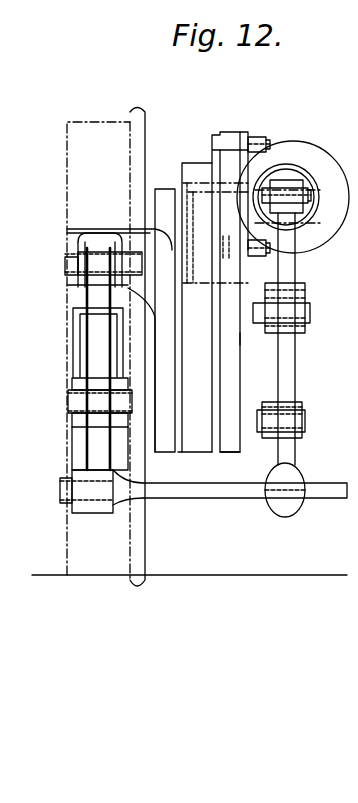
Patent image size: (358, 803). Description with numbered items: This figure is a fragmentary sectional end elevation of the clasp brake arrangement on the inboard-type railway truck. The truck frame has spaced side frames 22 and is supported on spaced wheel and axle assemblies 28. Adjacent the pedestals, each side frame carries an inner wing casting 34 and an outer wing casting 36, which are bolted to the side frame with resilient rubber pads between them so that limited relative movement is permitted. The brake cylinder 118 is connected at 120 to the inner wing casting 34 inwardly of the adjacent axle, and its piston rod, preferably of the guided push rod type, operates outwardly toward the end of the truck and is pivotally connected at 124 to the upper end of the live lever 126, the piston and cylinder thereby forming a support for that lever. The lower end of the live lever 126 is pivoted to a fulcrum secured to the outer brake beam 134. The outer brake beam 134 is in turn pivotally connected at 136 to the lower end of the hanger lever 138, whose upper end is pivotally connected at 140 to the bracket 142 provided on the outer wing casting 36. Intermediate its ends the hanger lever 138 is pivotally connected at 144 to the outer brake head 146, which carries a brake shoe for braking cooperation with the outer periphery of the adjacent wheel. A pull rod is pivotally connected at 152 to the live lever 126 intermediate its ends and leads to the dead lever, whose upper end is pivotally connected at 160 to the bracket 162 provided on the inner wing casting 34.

The side frame 22 is at (192, 452).
The wheel and axle assembly 28 is at (92, 572).
The inner wing casting 34 is at (228, 452).
The outer wing casting 36 is at (155, 208).
The brake cylinder 118 is at (308, 150).
The connection of brake cylinder to inner wing casting 120 is at (262, 142).
The pivotal connection of piston rod to live lever 124 is at (310, 204).
The live lever 126 is at (290, 273).
The outer brake beam 134 is at (257, 490).
The pivotal connection of outer brake beam to hanger lever 136 is at (60, 490).
The hanger lever 138 is at (100, 293).
The pivotal connection of hanger lever to bracket 140 is at (65, 266).
The bracket 142 is at (68, 229).
The pivotal connection of hanger lever to outer brake head 144 is at (68, 400).
The outer brake head 146 is at (80, 341).
The pivotal connection of pull rod to live lever 152 is at (308, 424).
The pivotal connection of dead lever to bracket 160 is at (305, 315).
The bracket 162 is at (247, 338).